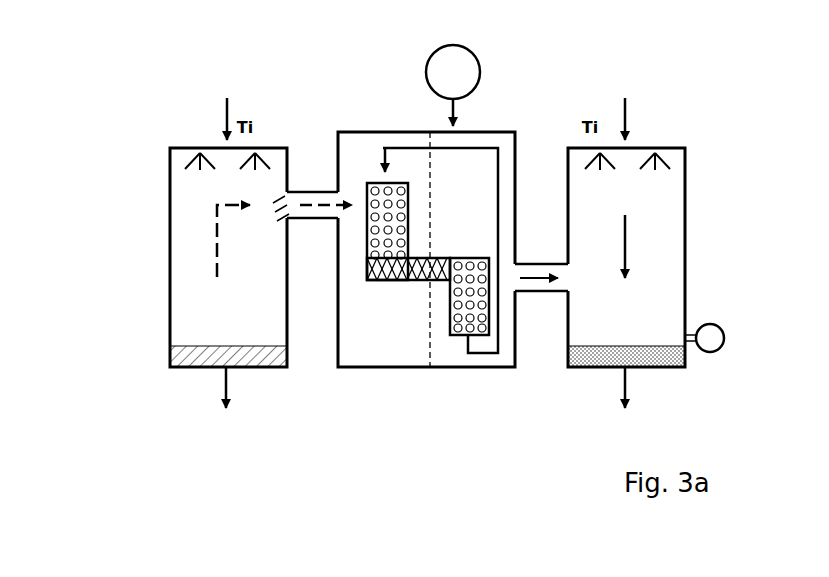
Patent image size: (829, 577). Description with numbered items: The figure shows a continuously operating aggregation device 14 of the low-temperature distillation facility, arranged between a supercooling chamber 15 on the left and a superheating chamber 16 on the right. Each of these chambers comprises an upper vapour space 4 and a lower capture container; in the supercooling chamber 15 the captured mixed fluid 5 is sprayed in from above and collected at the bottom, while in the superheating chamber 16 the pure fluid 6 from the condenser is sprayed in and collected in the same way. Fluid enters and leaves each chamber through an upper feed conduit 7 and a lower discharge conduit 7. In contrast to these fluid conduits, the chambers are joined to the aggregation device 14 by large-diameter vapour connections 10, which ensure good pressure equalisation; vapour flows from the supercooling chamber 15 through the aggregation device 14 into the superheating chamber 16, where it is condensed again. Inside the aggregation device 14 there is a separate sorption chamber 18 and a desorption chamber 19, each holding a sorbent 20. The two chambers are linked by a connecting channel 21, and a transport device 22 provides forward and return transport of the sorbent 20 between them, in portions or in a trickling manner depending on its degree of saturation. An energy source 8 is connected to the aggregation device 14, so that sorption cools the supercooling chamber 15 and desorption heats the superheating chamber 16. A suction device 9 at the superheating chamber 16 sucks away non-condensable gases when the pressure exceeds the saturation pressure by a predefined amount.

The vapour space 4 is at (266, 268).
The mixed fluid 5 is at (193, 166).
The pure fluid 6 is at (633, 170).
The conduit 7 is at (228, 143).
The energy source 8 is at (453, 85).
The suction device 9 is at (716, 326).
The vapour connection 10 is at (316, 192).
The aggregation device 14 is at (381, 131).
The supercooling chamber 15 is at (170, 252).
The superheating chamber 16 is at (686, 253).
The sorption chamber 18 is at (357, 331).
The desorption chamber 19 is at (450, 218).
The sorbent 20 is at (378, 215).
The connecting channel 21 is at (380, 279).
The transport device 22 is at (467, 148).